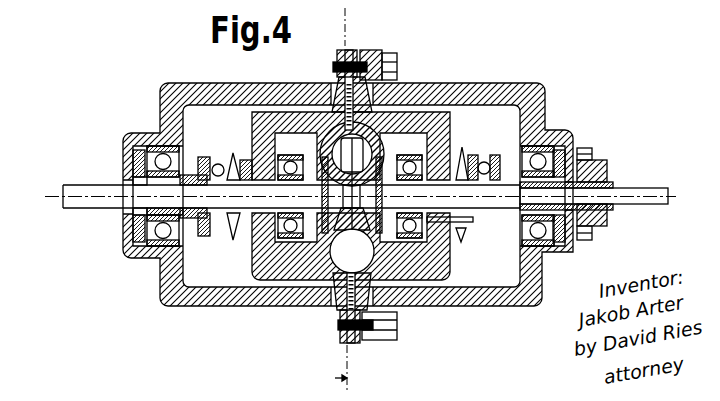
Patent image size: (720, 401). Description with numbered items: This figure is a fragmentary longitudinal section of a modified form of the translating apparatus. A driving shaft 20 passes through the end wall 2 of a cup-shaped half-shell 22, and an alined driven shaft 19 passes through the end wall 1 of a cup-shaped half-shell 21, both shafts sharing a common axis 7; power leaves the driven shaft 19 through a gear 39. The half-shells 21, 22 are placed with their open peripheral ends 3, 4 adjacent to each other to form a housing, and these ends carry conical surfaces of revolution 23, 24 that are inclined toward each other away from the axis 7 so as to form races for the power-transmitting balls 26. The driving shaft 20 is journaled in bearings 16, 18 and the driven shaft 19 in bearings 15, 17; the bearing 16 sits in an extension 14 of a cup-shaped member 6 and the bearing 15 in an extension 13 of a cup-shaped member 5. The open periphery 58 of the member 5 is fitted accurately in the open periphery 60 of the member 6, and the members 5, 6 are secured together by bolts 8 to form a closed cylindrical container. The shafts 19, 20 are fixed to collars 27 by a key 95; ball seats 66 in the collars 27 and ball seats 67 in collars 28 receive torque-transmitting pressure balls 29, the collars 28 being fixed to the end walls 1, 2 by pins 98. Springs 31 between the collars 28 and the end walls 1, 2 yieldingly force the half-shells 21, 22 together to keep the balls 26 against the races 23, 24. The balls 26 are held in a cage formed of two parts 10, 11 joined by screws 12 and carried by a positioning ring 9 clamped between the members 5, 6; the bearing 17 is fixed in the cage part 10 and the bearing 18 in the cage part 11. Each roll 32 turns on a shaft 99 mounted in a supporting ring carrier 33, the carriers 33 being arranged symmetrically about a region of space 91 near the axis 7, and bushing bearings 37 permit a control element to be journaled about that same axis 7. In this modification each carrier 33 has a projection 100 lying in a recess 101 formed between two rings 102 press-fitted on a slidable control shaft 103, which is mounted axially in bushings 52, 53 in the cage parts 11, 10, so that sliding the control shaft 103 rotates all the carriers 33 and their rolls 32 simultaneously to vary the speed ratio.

The end wall 1 is at (455, 236).
The end wall 2 is at (250, 135).
The open peripheral end 3 is at (388, 112).
The open peripheral end 4 is at (356, 78).
The cup-shaped member 5 is at (514, 90).
The cup-shaped member 6 is at (240, 92).
The common axis 7 is at (360, 194).
The bolts 8 is at (390, 62).
The positioning ring 9 is at (373, 52).
The cage part 10 is at (452, 150).
The cage part 11 is at (300, 258).
The screws 12 is at (350, 272).
The extension 13 is at (600, 166).
The extension 14 is at (140, 182).
The bearing 15 is at (595, 225).
The bearing 16 is at (140, 170).
The bearing 17 is at (522, 292).
The bearing 18 is at (282, 250).
The driven shaft 19 is at (612, 184).
The driving shaft 20 is at (82, 190).
The cup-shaped half-shell 21 is at (452, 265).
The cup-shaped half-shell 22 is at (292, 275).
The surface of revolution 23 is at (412, 112).
The surface of revolution 24 is at (341, 22).
The power-transmitting balls 26 is at (376, 338).
The collars 27 is at (160, 160).
The collars 28 is at (195, 158).
The torque-transmitting pressure balls 29 is at (168, 150).
The springs 31 is at (204, 165).
The roll 32 is at (433, 110).
The supporting ring carrier 33 is at (428, 165).
The bushing bearings 37 is at (478, 282).
The gear 39 is at (588, 152).
The bushing 52 is at (250, 285).
The bushing 53 is at (448, 172).
The open periphery 58 is at (393, 327).
The open periphery 60 is at (380, 330).
The ball seats 66 is at (130, 207).
The ball seats 67 is at (140, 248).
The region of space 91 is at (468, 292).
The key 95 is at (146, 218).
The pins 98 is at (222, 230).
The shaft 99 is at (348, 128).
The projection 100 is at (345, 117).
The recess 101 is at (405, 292).
The rings 102 is at (440, 292).
The control member shaft 103 is at (640, 192).